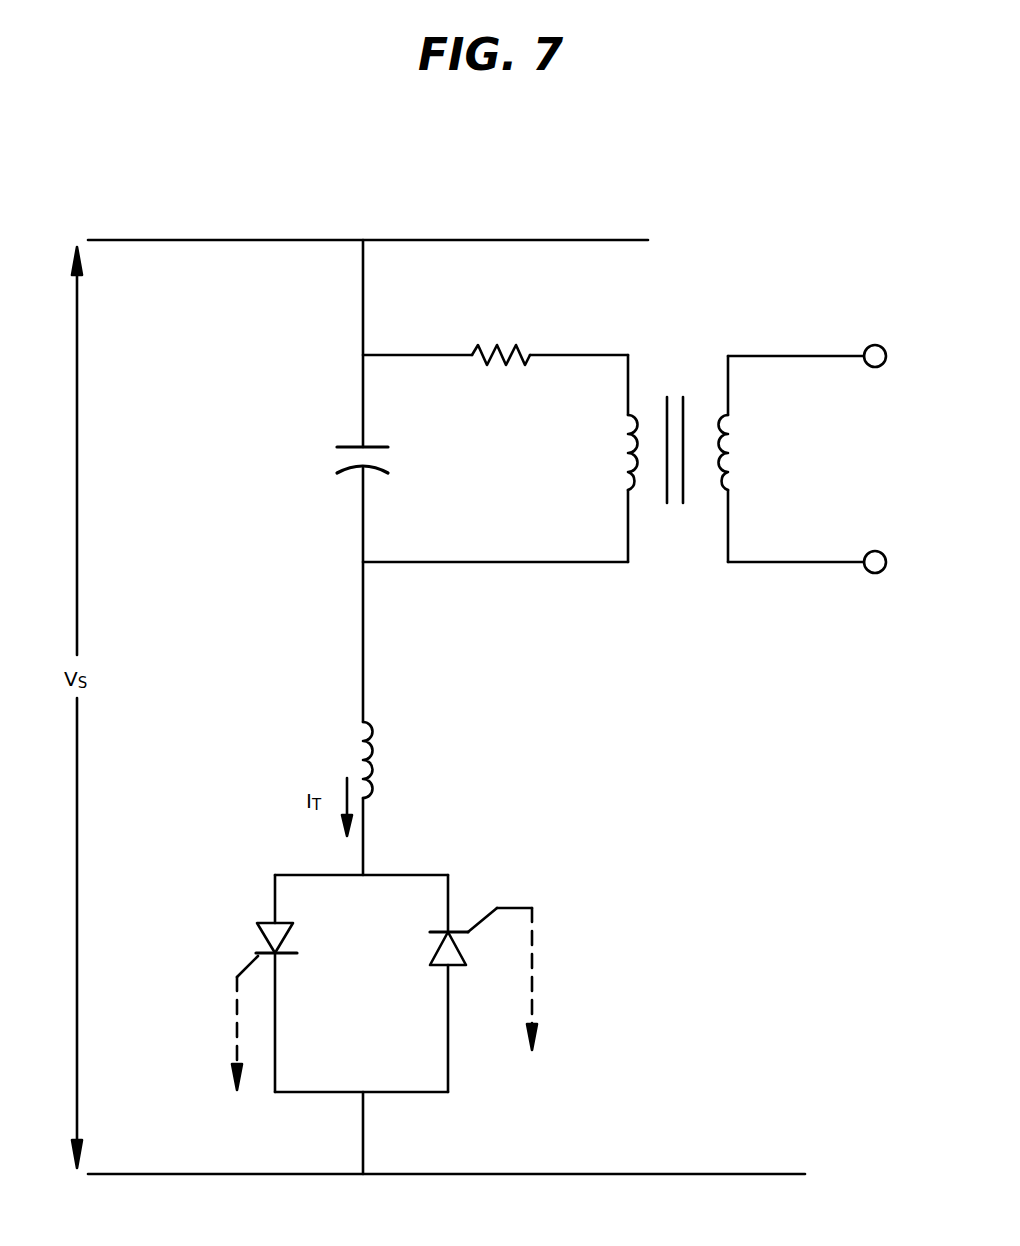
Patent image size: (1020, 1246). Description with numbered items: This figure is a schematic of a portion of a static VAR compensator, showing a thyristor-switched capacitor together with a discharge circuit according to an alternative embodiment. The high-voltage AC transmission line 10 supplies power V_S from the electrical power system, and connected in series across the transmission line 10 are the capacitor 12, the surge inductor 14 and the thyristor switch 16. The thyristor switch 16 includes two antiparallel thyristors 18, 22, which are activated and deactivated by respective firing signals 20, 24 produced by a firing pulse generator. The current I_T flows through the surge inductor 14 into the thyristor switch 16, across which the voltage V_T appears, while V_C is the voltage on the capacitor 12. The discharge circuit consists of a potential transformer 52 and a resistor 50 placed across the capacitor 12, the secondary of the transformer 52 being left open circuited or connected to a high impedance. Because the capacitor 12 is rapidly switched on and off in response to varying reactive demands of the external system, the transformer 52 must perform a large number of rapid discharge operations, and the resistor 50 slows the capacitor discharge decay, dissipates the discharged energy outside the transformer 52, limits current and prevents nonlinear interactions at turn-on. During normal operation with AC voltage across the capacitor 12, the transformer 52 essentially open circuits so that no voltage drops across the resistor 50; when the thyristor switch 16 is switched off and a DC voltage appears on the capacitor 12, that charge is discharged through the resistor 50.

The AC transmission line 10 is at (563, 240).
The capacitor 12 is at (383, 447).
The surge inductor 14 is at (388, 748).
The thyristor switch 16 is at (472, 862).
The thyristor 18 is at (256, 930).
The firing signal 20 is at (235, 1043).
The thyristor 22 is at (455, 966).
The firing signal 24 is at (536, 1006).
The resistor 50 is at (498, 347).
The potential transformer 52 is at (677, 378).